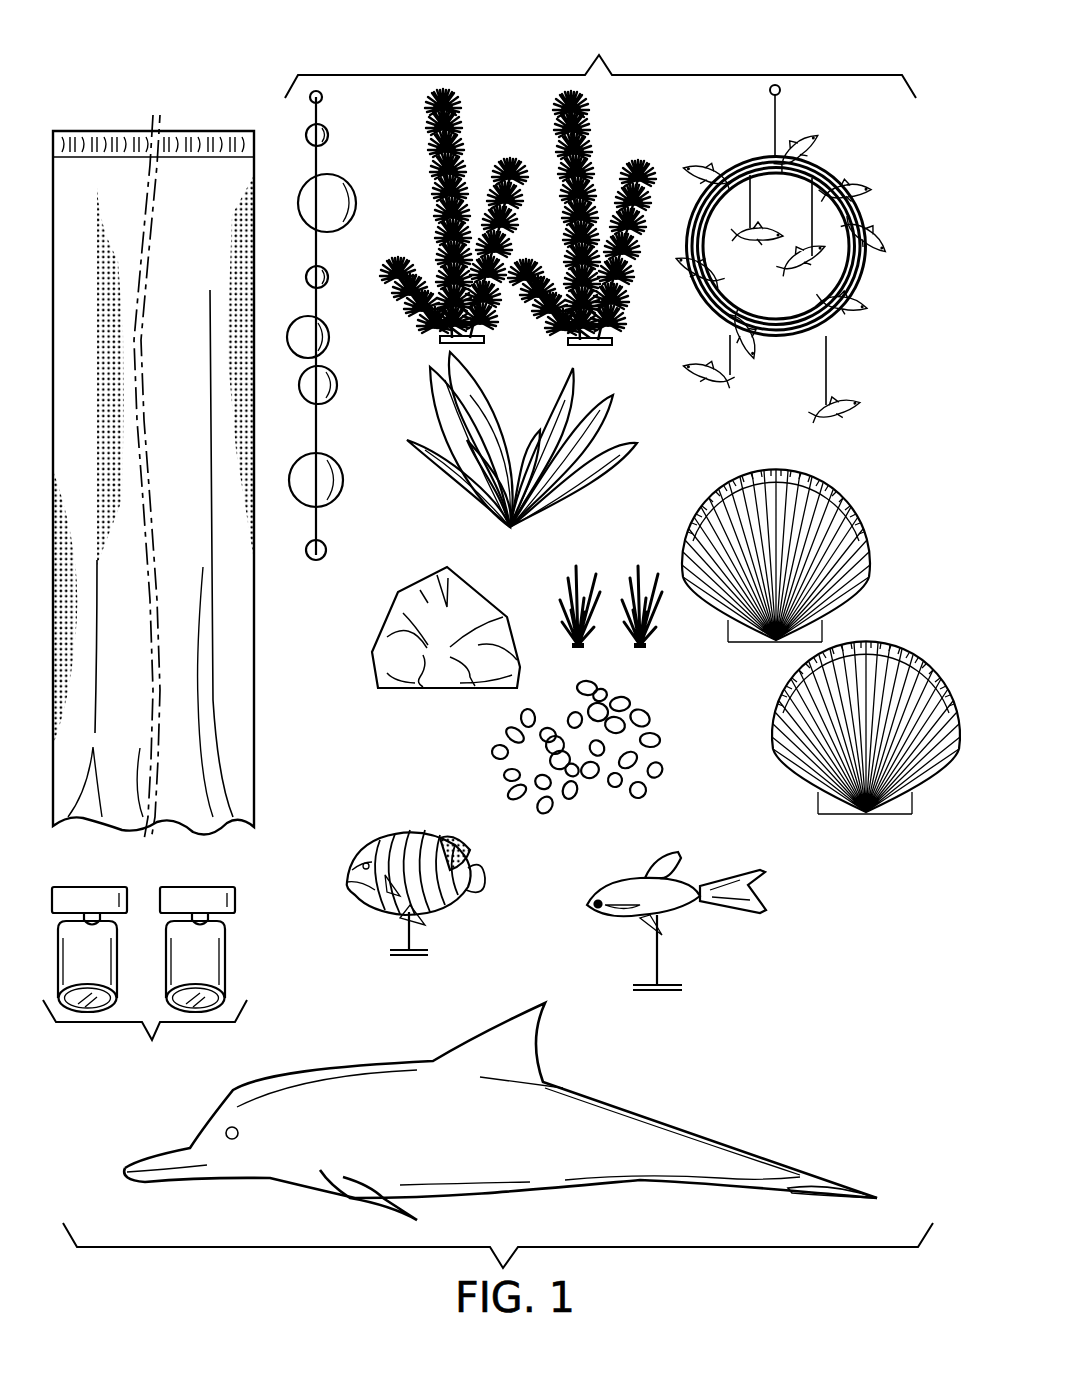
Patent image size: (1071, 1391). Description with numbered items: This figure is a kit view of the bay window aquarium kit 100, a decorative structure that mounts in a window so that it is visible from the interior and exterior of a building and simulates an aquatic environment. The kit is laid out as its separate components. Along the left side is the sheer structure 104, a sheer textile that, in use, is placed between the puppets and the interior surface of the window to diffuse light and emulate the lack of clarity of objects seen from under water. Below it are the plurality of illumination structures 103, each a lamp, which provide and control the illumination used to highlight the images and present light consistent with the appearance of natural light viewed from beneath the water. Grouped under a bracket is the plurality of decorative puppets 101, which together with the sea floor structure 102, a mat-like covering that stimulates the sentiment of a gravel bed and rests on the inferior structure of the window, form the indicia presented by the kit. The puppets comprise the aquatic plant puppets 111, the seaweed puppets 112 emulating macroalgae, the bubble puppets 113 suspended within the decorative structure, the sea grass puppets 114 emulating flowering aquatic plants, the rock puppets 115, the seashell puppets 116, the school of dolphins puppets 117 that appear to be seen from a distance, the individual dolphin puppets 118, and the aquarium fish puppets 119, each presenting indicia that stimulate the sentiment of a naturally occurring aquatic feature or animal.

The bay window aquarium kit 100 is at (843, 1254).
The plurality of decorative puppets 101 is at (600, 55).
The sea floor structure 102 is at (650, 720).
The plurality of illumination structures 103 is at (145, 987).
The sheer structure 104 is at (118, 131).
The aquatic plant puppets 111 is at (511, 163).
The seaweed puppets 112 is at (593, 437).
The bubble puppets 113 is at (330, 158).
The sea grass puppets 114 is at (653, 580).
The rock puppets 115 is at (427, 582).
The seashell puppets 116 is at (883, 627).
The school of dolphins puppets 117 is at (866, 208).
The dolphin puppets 118 is at (690, 1150).
The aquarium fish puppets 119 is at (610, 888).